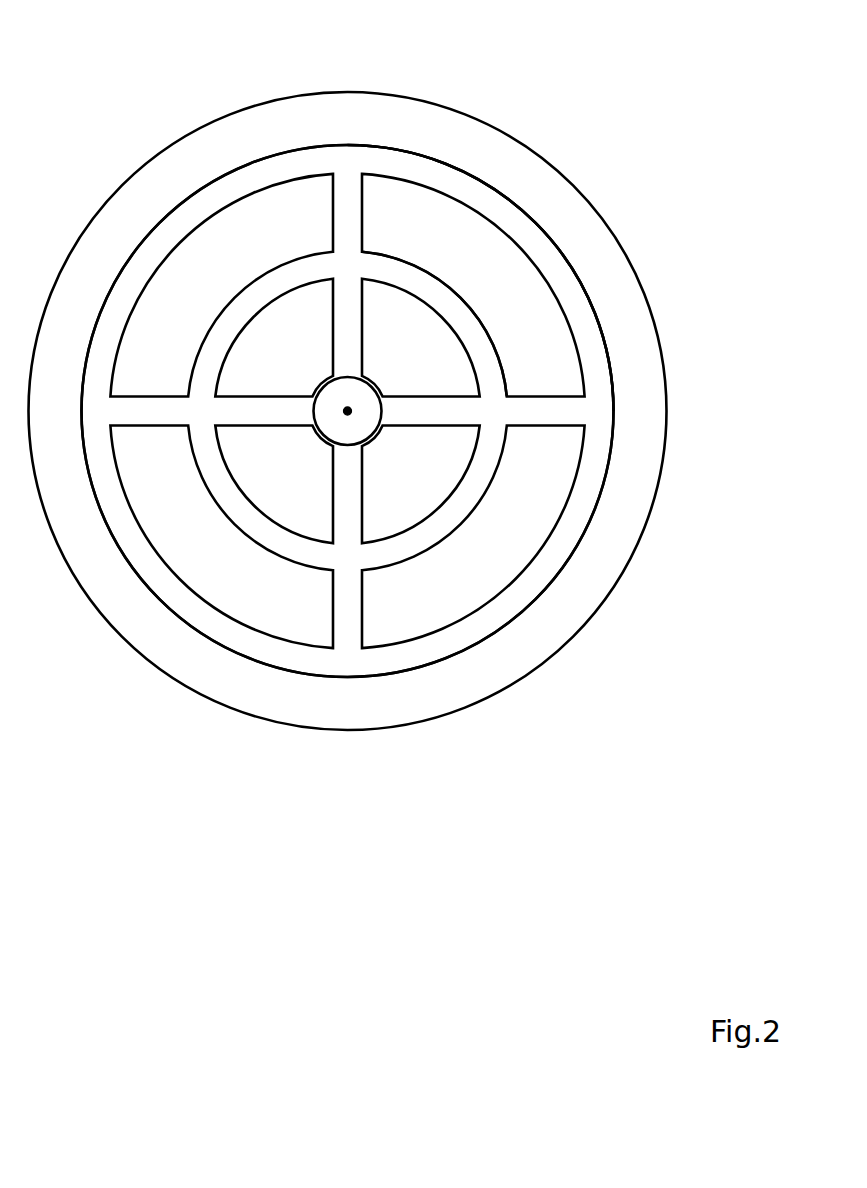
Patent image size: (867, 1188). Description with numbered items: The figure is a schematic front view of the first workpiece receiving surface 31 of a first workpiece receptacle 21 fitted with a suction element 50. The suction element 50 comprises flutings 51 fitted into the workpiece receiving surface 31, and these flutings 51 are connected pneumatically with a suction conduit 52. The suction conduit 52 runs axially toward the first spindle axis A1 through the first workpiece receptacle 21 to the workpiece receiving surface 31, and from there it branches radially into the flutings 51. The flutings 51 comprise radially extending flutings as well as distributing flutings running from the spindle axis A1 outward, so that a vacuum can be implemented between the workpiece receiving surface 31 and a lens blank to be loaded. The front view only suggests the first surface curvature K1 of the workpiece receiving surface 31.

The first workpiece receptacle 21 is at (539, 138).
The first workpiece receiving surface 31 is at (442, 124).
The first surface curvature K1 is at (348, 411).
The suction element 50 is at (389, 375).
The flutings 51 is at (500, 328).
The suction conduit 52 is at (345, 361).
The first spindle axis A1 is at (338, 398).